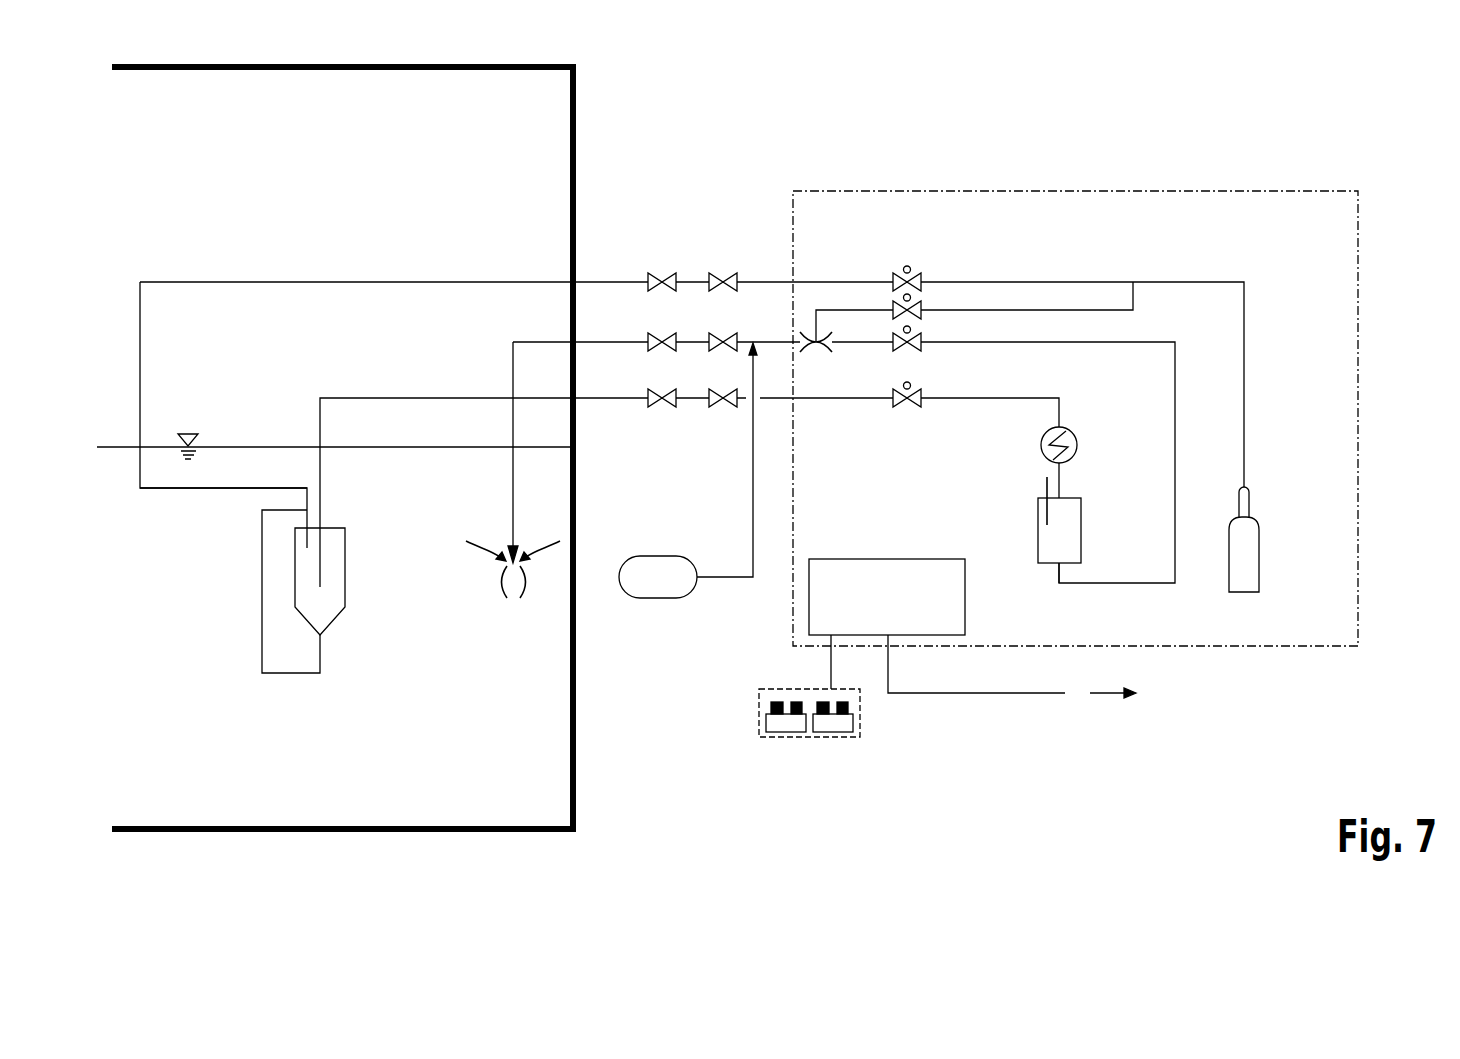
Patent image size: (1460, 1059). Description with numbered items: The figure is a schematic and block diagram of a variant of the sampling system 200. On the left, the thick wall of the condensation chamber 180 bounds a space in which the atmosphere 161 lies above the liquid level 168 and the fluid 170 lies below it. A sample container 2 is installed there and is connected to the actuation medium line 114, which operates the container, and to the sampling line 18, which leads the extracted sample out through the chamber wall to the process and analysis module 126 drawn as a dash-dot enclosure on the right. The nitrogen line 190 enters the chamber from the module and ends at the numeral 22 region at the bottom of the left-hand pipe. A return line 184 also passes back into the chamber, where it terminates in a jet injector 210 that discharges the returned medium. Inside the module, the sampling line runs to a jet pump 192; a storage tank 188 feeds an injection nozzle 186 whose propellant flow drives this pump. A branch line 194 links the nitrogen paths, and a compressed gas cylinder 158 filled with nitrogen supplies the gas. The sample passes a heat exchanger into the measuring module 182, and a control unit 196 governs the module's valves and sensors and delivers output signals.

The condensation chamber 180 is at (577, 118).
The sampling system 200 is at (807, 88).
The atmosphere 161 is at (448, 149).
The fluid 170 is at (449, 766).
The liquid level 168 is at (198, 438).
The nitrogen line 190 is at (140, 383).
The liquid bath 22 is at (157, 490).
The sampling line 18 is at (320, 487).
The sample container 2 is at (345, 567).
The actuation medium line 114 is at (262, 633).
The return line 184 is at (513, 484).
The jet injector 210 is at (533, 584).
The process and analysis module 126 is at (1215, 190).
The branch line 194 is at (1135, 303).
The jet pump 192 is at (815, 364).
The injection nozzle 186 is at (748, 352).
The storage tank 188 is at (661, 556).
The measuring module 182 is at (1037, 508).
The control unit 196 is at (898, 557).
The compressed gas cylinder 158 is at (1260, 552).